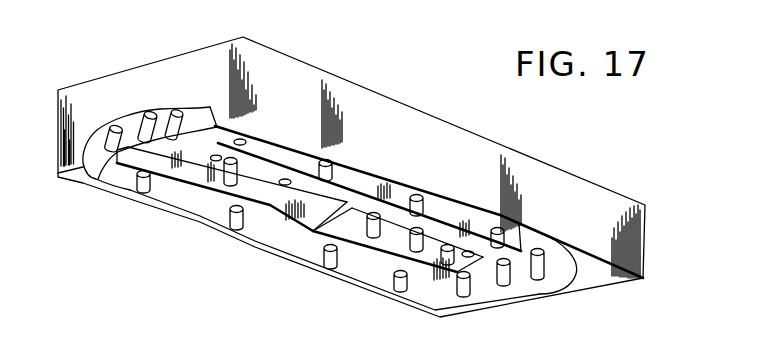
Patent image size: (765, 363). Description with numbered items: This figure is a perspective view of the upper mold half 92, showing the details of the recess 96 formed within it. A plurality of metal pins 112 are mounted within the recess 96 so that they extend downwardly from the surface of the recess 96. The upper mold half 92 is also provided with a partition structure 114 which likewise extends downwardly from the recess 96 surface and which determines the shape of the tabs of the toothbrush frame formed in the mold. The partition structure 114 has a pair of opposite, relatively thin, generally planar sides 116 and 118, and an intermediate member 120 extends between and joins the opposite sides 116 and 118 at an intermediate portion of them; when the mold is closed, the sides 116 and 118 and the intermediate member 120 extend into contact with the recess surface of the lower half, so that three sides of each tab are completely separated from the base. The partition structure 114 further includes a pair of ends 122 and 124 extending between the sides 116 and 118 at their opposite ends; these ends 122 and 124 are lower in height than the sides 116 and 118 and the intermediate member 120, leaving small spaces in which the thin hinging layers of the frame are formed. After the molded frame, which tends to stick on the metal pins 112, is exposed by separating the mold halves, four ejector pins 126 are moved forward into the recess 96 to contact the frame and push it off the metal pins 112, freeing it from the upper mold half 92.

The upper mold half 92 is at (647, 234).
The recess 96 is at (130, 121).
The metal pins 112 is at (418, 196).
The partition structure 114 is at (260, 222).
The side 116 is at (369, 258).
The side 118 is at (416, 220).
The intermediate member 120 is at (327, 217).
The end 122 is at (160, 122).
The end 124 is at (466, 258).
The ejector pins 126 is at (290, 172).